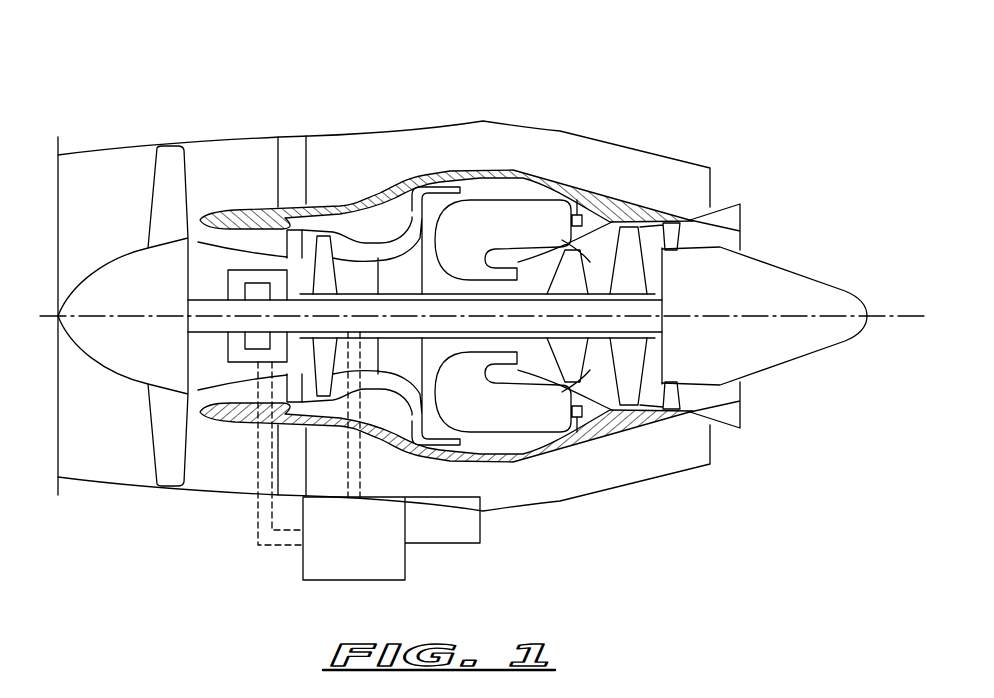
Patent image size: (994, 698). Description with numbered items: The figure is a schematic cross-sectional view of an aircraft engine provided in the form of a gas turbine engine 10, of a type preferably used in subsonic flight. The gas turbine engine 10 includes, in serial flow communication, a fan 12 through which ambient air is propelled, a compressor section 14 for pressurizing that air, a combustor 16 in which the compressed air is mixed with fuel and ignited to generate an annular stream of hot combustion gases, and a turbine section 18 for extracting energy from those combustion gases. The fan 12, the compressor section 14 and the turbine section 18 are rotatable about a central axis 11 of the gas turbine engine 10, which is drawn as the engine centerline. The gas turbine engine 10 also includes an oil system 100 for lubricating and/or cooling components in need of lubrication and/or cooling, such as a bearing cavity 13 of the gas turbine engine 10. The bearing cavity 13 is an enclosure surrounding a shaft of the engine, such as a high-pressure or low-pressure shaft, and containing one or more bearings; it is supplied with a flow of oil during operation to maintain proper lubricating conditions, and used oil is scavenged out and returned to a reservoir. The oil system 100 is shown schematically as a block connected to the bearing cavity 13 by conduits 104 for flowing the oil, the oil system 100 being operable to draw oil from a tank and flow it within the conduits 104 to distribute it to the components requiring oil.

The gas turbine engine 10 is at (618, 99).
The central axis 11 is at (893, 318).
The fan 12 is at (167, 427).
The bearing cavity 13 is at (239, 360).
The compressor section 14 is at (368, 250).
The combustor 16 is at (503, 215).
The turbine section 18 is at (598, 362).
The oil system 100 is at (278, 556).
The conduits 104 is at (258, 512).